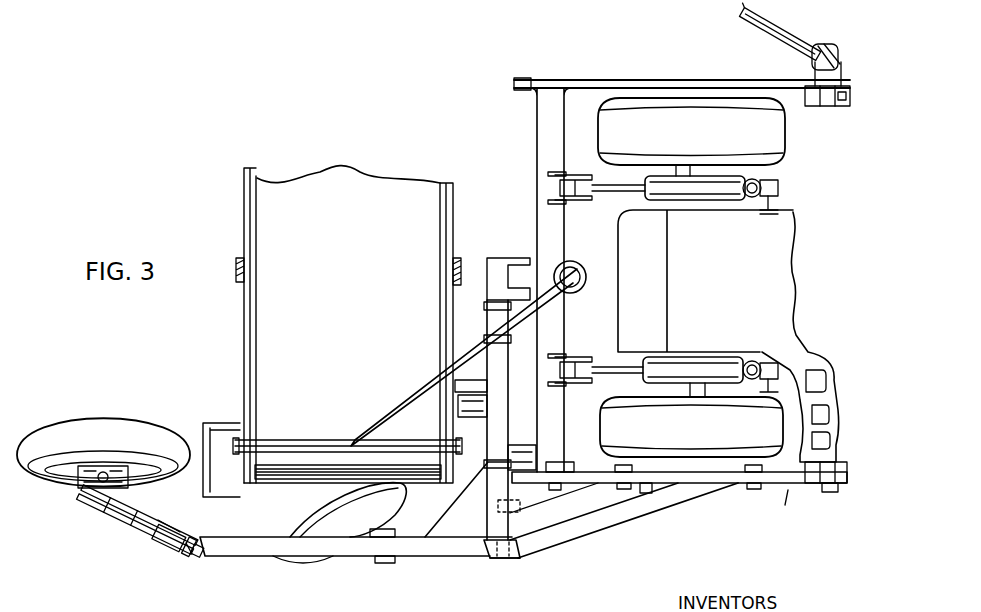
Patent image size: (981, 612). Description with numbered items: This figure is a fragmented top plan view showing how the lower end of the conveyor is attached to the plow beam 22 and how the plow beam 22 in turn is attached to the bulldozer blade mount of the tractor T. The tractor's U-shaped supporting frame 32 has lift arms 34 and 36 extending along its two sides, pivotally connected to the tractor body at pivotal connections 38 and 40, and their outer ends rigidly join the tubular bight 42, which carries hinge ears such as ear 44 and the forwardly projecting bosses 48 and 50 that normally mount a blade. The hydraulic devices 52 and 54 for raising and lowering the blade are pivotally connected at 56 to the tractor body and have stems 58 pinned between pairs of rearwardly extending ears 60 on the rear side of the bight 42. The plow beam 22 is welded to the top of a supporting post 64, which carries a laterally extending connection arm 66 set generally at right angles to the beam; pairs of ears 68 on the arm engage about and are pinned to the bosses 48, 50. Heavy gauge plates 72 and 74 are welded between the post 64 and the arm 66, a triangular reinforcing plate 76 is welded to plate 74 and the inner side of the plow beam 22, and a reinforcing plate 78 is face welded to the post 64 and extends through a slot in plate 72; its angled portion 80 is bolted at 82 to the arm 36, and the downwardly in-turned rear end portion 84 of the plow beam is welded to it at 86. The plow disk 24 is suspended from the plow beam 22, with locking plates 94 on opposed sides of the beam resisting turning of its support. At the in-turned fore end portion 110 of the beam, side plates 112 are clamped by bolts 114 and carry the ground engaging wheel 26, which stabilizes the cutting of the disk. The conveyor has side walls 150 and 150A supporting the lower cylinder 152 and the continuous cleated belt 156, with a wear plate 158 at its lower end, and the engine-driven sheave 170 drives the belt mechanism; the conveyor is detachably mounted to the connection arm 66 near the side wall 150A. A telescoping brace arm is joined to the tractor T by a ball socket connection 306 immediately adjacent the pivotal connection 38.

The plow beam 22 is at (442, 556).
The plow disk 24 is at (300, 565).
The ground engaging wheel 26 is at (104, 418).
The U-shaped supporting frame 32 is at (663, 243).
The lift arm 34 is at (694, 80).
The lift arm 36 is at (777, 485).
The pivotal connection 38 is at (832, 106).
The pivotal connection 40 is at (820, 492).
The tubular bar or bight 42 is at (537, 128).
The hinge ear 44 is at (514, 78).
The boss or ear 48 is at (556, 268).
The boss or ear 50 is at (530, 455).
The upper damper 52 is at (760, 182).
The lower damper 54 is at (722, 356).
The pivotal connection of hydraulic device 56 is at (780, 190).
The stem 58 is at (615, 198).
The rearwardly extending ears 60 is at (558, 174).
The supporting post 64 is at (505, 560).
The connection arm 66 is at (487, 412).
The pair of ears 68 is at (508, 258).
The plate 72 is at (510, 522).
The plate 74 is at (482, 527).
The triangular reinforcing plate 76 is at (488, 560).
The reinforcing plate 78 is at (570, 492).
The angled portion 80 is at (498, 506).
The bolted connection 82 is at (628, 464).
The rear end portion of plow beam 84 is at (596, 531).
The weld 86 is at (690, 500).
The locking plates 94 is at (376, 540).
The fore end portion of plow beam 110 is at (144, 518).
The side plates 112 is at (146, 503).
The bolts 114 is at (133, 527).
The side wall 150 is at (456, 192).
The side wall 150A is at (246, 200).
The lower cylinder 152 is at (303, 442).
The continuous belt 156 is at (334, 170).
The wear plate 158 is at (218, 425).
The sheave 170 is at (560, 470).
The ball socket connection 306 is at (826, 44).
The tractor T is at (786, 503).